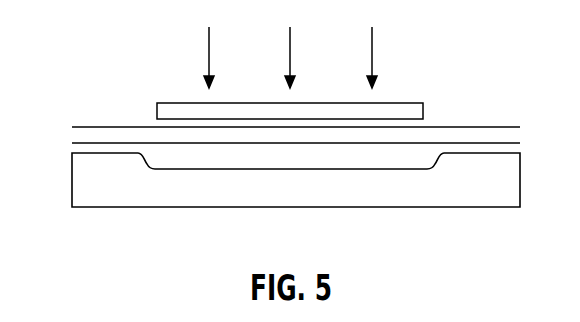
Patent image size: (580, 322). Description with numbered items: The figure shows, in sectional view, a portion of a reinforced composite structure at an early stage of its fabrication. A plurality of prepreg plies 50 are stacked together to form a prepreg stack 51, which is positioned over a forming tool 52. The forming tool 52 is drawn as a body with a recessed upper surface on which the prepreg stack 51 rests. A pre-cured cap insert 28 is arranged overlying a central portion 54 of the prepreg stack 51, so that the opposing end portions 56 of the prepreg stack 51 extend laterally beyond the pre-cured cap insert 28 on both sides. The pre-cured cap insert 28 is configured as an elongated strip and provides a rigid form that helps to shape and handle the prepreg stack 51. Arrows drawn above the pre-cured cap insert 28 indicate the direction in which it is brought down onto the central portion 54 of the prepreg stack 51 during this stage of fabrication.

The pre-cured cap insert 28 is at (394, 90).
The prepreg plies 50 is at (449, 110).
The prepreg stack 51 is at (130, 127).
The forming tool 52 is at (82, 180).
The central portion 54 is at (313, 127).
The opposing end portions 56 is at (107, 127).